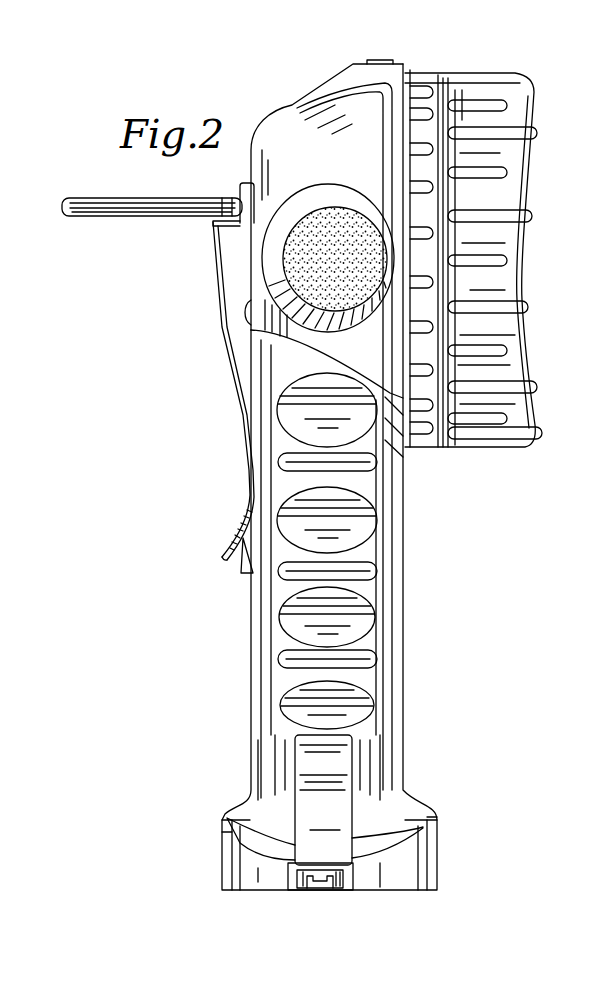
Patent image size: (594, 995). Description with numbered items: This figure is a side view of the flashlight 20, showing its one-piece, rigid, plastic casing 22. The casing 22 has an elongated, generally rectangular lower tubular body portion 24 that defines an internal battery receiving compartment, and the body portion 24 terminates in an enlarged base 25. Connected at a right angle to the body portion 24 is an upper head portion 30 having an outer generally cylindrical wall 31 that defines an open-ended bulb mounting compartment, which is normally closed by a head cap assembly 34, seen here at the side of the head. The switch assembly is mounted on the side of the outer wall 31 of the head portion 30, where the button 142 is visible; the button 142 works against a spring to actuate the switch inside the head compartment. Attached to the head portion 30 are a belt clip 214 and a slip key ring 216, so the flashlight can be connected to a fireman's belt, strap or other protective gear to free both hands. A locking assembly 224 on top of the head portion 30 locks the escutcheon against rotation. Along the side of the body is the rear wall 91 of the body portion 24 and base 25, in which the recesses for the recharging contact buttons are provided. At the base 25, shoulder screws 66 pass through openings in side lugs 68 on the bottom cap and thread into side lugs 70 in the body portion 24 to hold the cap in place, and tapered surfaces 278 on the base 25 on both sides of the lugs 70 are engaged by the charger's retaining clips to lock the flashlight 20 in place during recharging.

The flashlight 20 is at (482, 537).
The casing 22 is at (413, 476).
The lower tubular body portion 24 is at (380, 587).
The base 25 is at (438, 832).
The upper head portion 30 is at (292, 120).
The outer generally cylindrical wall 31 is at (363, 112).
The head cap assembly 34 is at (524, 75).
The shoulder screws 66 is at (312, 882).
The side lugs 68 is at (328, 868).
The side lugs 70 is at (337, 817).
The rear wall 91 is at (250, 658).
The button 142 is at (333, 210).
The belt clip 214 is at (222, 327).
The slip key ring 216 is at (112, 200).
The locking assembly 224 is at (360, 61).
The tapered surfaces 278 is at (226, 820).